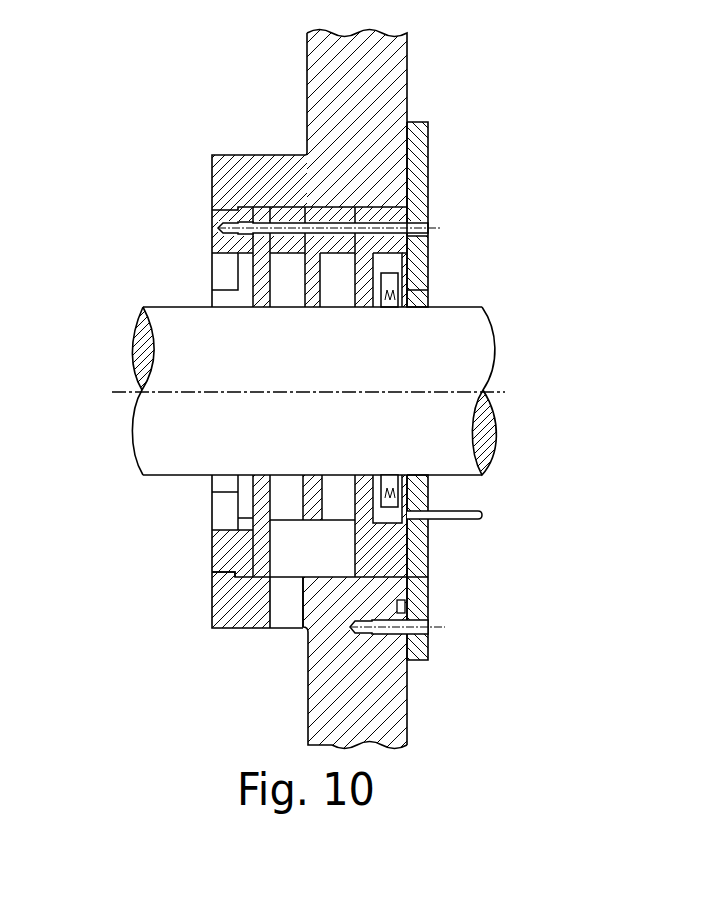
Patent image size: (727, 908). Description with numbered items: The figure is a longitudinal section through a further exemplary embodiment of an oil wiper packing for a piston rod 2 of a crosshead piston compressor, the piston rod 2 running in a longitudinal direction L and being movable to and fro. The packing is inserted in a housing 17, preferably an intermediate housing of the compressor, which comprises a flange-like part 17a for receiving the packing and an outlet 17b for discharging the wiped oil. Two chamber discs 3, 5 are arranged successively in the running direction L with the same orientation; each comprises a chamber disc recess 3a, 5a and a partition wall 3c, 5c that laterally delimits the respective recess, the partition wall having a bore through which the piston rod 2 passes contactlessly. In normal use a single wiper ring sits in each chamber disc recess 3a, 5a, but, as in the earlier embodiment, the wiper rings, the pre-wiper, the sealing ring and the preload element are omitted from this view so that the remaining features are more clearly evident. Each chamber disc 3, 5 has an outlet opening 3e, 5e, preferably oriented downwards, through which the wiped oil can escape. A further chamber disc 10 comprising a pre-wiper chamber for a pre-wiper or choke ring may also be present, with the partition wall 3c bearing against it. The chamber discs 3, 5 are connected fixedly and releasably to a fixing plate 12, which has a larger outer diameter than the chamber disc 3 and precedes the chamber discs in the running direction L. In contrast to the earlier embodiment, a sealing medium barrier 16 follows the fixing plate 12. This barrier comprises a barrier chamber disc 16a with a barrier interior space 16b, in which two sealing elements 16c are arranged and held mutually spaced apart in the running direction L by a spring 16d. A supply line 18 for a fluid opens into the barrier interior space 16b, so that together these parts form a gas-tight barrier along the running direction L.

The piston rod 2 is at (148, 428).
The chamber disc 3 is at (275, 210).
The chamber disc recess 3a is at (238, 262).
The partition wall 3c is at (240, 500).
The outlet opening 3e is at (236, 537).
The chamber disc 5 is at (322, 210).
The chamber disc recess 5a is at (422, 222).
The partition wall 5c is at (240, 512).
The outlet opening 5e is at (236, 556).
The chamber disc 10 is at (225, 220).
The fixing plate 12 is at (430, 590).
The sealing medium barrier 16 is at (422, 240).
The barrier chamber disc 16a is at (504, 399).
The barrier interior space 16b is at (425, 262).
The sealing element 16c is at (407, 298).
The spring 16d is at (430, 503).
The housing 17 is at (407, 78).
The flange-like part 17a is at (228, 170).
The outlet 17b is at (283, 627).
The supply line 18 is at (457, 521).
The longitudinal direction L is at (483, 396).